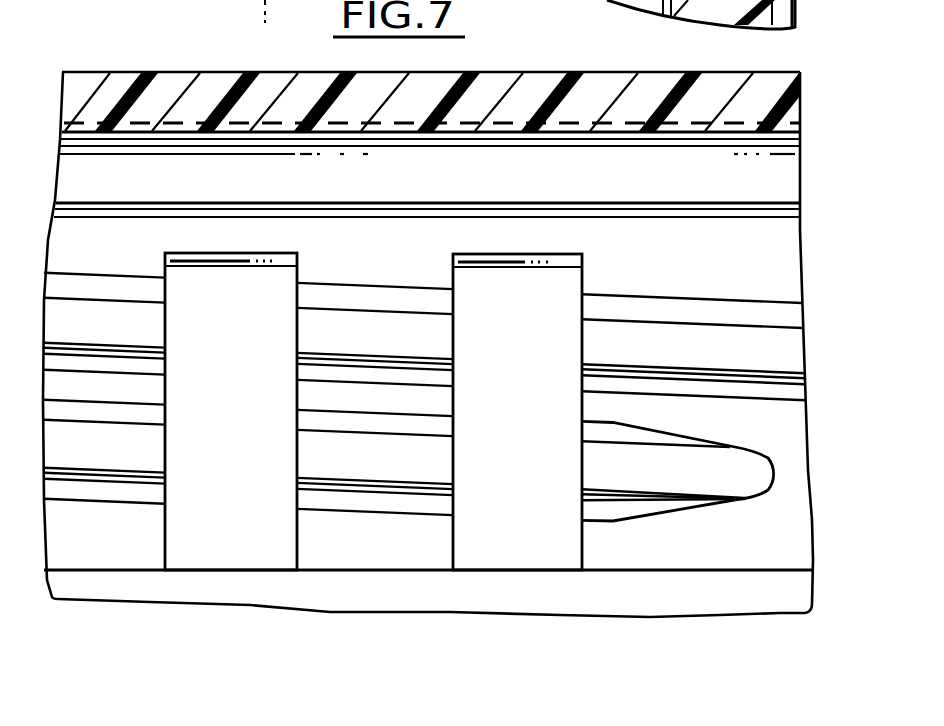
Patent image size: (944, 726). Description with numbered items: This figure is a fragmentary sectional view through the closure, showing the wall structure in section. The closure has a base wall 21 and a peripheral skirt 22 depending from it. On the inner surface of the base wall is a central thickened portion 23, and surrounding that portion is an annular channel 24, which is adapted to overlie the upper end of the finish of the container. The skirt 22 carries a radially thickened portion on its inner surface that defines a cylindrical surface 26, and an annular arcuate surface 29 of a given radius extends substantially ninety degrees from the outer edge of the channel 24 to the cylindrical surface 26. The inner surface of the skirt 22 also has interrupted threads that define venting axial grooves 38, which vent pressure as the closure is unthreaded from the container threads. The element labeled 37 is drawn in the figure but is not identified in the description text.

The base wall 21 is at (540, 85).
The peripheral skirt 22 is at (712, 557).
The central thickened portion 23 is at (201, 110).
The annular channel 24 is at (450, 137).
The cylindrical surface 26 is at (357, 188).
The annular arcuate surface 29 is at (735, 143).
The laminated strips 37 is at (363, 320).
The venting axial grooves 38 is at (253, 444).